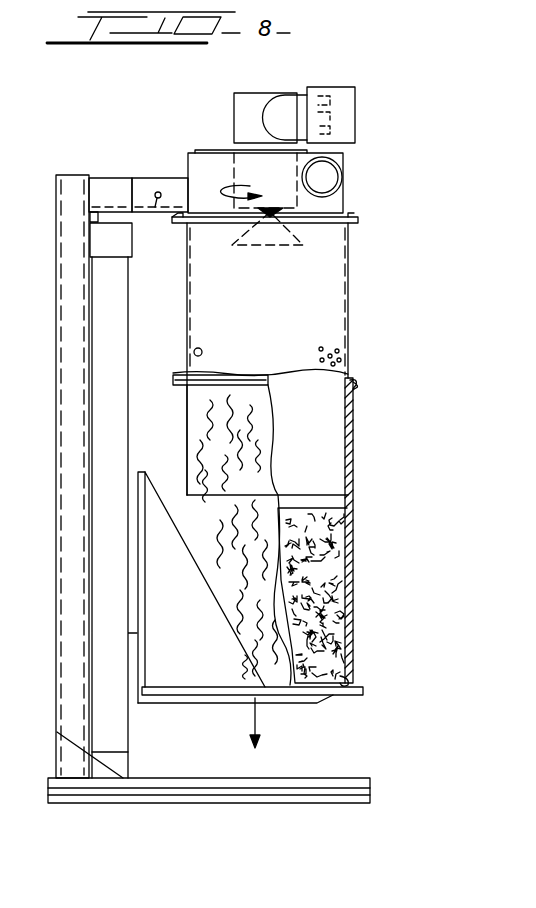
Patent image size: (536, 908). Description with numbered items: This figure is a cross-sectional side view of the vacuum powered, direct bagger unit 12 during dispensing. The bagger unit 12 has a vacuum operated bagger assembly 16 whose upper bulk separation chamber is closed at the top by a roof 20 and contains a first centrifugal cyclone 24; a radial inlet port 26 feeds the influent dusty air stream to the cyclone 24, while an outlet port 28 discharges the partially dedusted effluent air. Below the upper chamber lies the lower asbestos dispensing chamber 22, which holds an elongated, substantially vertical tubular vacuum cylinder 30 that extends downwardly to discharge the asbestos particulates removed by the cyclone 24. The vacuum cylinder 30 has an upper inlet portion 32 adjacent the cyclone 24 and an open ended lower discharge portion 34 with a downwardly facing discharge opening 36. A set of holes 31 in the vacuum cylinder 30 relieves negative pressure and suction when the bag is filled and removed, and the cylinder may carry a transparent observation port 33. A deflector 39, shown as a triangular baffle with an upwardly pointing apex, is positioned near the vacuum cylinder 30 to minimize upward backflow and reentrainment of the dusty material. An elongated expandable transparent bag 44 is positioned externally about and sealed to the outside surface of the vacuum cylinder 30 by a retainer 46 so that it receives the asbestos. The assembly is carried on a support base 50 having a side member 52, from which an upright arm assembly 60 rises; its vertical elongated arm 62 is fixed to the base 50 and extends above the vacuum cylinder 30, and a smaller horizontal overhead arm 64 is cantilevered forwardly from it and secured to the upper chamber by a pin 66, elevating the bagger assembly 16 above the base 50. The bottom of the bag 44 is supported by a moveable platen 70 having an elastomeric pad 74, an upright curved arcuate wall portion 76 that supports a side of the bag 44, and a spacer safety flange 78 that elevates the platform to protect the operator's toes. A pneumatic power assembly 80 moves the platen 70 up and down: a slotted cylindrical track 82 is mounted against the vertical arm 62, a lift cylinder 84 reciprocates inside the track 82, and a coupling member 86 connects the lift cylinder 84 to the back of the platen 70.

The bagger unit 12 is at (168, 108).
The vacuum operated bagger assembly 16 is at (234, 100).
The roof 20 is at (270, 93).
The lower asbestos dispensing chamber 22 is at (188, 165).
The first cyclone 24 is at (338, 212).
The radial inlet port 26 is at (343, 195).
The outlet port 28 is at (268, 115).
The tubular vacuum cylinder 30 is at (348, 318).
The holes 31 is at (343, 348).
The upper inlet portion 32 is at (350, 232).
The transparent observation ports 33 is at (194, 352).
The lower discharge portion 34 is at (352, 470).
The discharge opening 36 is at (350, 498).
The deflector 39 is at (268, 250).
The bag 44 is at (352, 592).
The retainer 46 is at (358, 386).
The support base 50 is at (48, 788).
The side member 52 is at (327, 797).
The arm assembly 60 is at (68, 612).
The vertical elongated arm 62 is at (68, 372).
The horizontal overhead arm 64 is at (97, 178).
The pin 66 is at (156, 208).
The platen 70 is at (333, 697).
The elastomeric pad 74 is at (352, 666).
The upright curved arcuate wall portion 76 is at (203, 582).
The spacer safety flange 78 is at (295, 705).
The pneumatic power assembly 80 is at (126, 438).
The slotted cylindrical track 82 is at (128, 752).
The lift cylinder 84 is at (132, 257).
The coupling member 86 is at (138, 472).